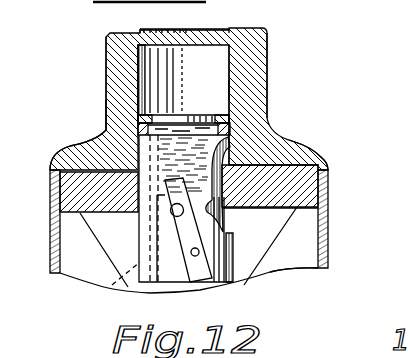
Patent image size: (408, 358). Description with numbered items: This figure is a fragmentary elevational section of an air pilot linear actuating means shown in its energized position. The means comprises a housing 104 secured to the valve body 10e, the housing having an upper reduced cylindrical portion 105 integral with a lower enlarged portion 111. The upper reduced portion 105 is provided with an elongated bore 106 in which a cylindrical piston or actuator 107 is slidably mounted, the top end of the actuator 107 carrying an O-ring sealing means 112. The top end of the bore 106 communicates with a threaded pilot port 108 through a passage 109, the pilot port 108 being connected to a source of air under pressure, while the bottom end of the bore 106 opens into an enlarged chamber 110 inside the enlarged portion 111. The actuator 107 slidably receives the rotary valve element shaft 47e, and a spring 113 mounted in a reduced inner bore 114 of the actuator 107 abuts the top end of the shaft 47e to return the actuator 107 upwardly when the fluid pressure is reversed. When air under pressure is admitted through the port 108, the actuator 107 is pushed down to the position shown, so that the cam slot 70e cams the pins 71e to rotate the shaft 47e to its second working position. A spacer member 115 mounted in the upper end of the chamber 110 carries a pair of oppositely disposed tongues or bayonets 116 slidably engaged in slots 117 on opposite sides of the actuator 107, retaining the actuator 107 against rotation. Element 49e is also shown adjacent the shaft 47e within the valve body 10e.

The housing 104 is at (293, 134).
The upper reduced cylindrical portion 105 is at (252, 74).
The elongated bore 106 is at (232, 92).
The piston or actuator 107 is at (182, 113).
The threaded pilot port 108 is at (148, 32).
The passage 109 is at (187, 31).
The enlarged chamber 110 is at (320, 225).
The lower enlarged portion 111 is at (300, 189).
The O-ring sealing means 112 is at (107, 125).
The spring 113 is at (106, 131).
The reduced inner bore 114 is at (72, 148).
The spacer member 115 is at (332, 179).
The tongues or bayonets 116 is at (88, 218).
The slots 117 is at (227, 162).
The valve body 10e is at (292, 268).
The rotary valve element shaft 47e is at (214, 283).
The guide 49e is at (278, 247).
The cam slot 70e is at (198, 252).
The pins 71e is at (171, 212).